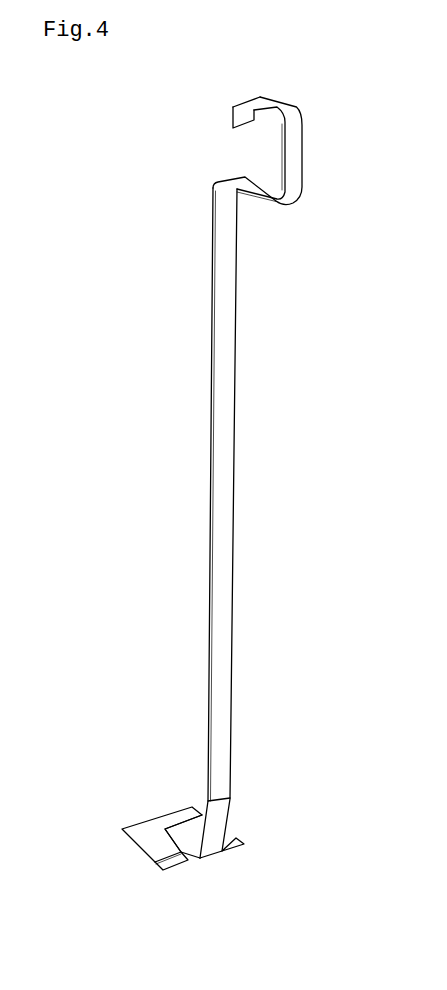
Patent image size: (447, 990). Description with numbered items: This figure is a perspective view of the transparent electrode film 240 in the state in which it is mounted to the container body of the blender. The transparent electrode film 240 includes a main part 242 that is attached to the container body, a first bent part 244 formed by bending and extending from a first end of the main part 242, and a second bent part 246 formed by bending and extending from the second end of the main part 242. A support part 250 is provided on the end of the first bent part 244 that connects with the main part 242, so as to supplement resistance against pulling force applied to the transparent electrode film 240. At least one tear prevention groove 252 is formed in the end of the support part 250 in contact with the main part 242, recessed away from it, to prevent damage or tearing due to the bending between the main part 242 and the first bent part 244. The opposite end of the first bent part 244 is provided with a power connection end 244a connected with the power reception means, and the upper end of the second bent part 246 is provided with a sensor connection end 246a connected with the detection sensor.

The transparent electrode film 240 is at (153, 498).
The main part 242 is at (314, 221).
The first bent part 244 is at (126, 845).
The power connection end 244a is at (183, 818).
The second bent part 246 is at (254, 159).
The sensor connection end 246a is at (233, 120).
The support part 250 is at (175, 866).
The tear prevention groove 252 is at (197, 862).